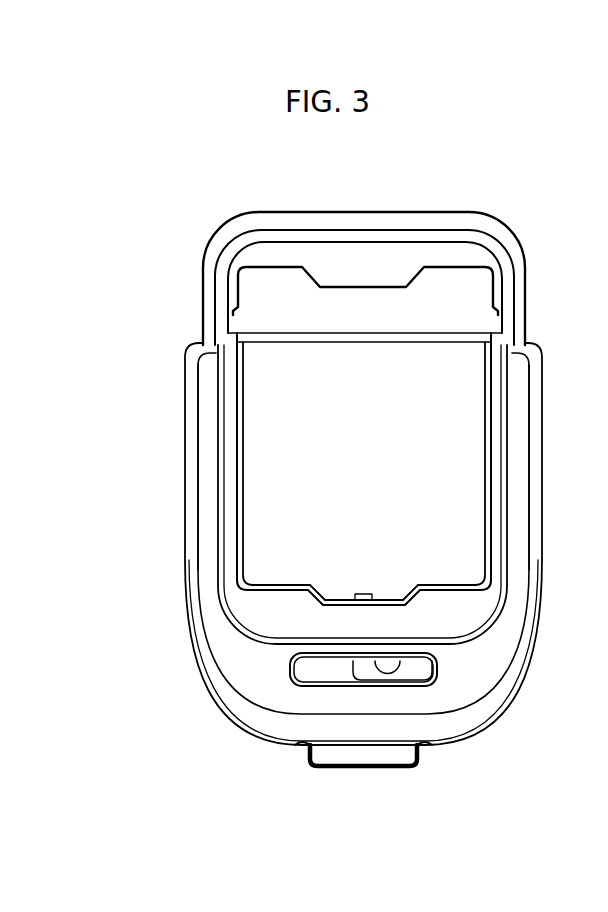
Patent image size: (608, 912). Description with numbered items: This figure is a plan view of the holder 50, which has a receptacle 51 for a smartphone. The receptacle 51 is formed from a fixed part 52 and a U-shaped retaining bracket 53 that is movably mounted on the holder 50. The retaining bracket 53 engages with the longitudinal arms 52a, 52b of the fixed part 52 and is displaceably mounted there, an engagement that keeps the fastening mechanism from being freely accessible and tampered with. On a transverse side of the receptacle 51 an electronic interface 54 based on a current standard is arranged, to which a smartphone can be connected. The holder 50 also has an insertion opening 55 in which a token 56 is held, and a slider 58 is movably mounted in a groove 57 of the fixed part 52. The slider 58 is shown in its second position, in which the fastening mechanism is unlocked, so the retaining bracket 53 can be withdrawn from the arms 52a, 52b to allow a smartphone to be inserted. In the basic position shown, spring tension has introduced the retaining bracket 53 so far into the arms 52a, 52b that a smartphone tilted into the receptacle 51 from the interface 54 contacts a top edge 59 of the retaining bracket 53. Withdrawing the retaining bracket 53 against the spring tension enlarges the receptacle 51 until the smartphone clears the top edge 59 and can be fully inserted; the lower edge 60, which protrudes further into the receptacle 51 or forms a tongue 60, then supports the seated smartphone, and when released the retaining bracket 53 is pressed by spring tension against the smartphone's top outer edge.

The holder 50 is at (162, 635).
The receptacle 51 is at (327, 390).
The fixed part 52 is at (210, 568).
The longitudinal arm 52a is at (518, 400).
The longitudinal arm 52b is at (207, 394).
The retaining bracket 53 is at (254, 205).
The electronic interface 54 is at (372, 596).
The insertion opening 55 is at (303, 758).
The token 56 is at (402, 754).
The groove 57 is at (312, 665).
The slider 58 is at (435, 683).
The top edge 59 is at (373, 224).
The lower edge 60 is at (327, 278).